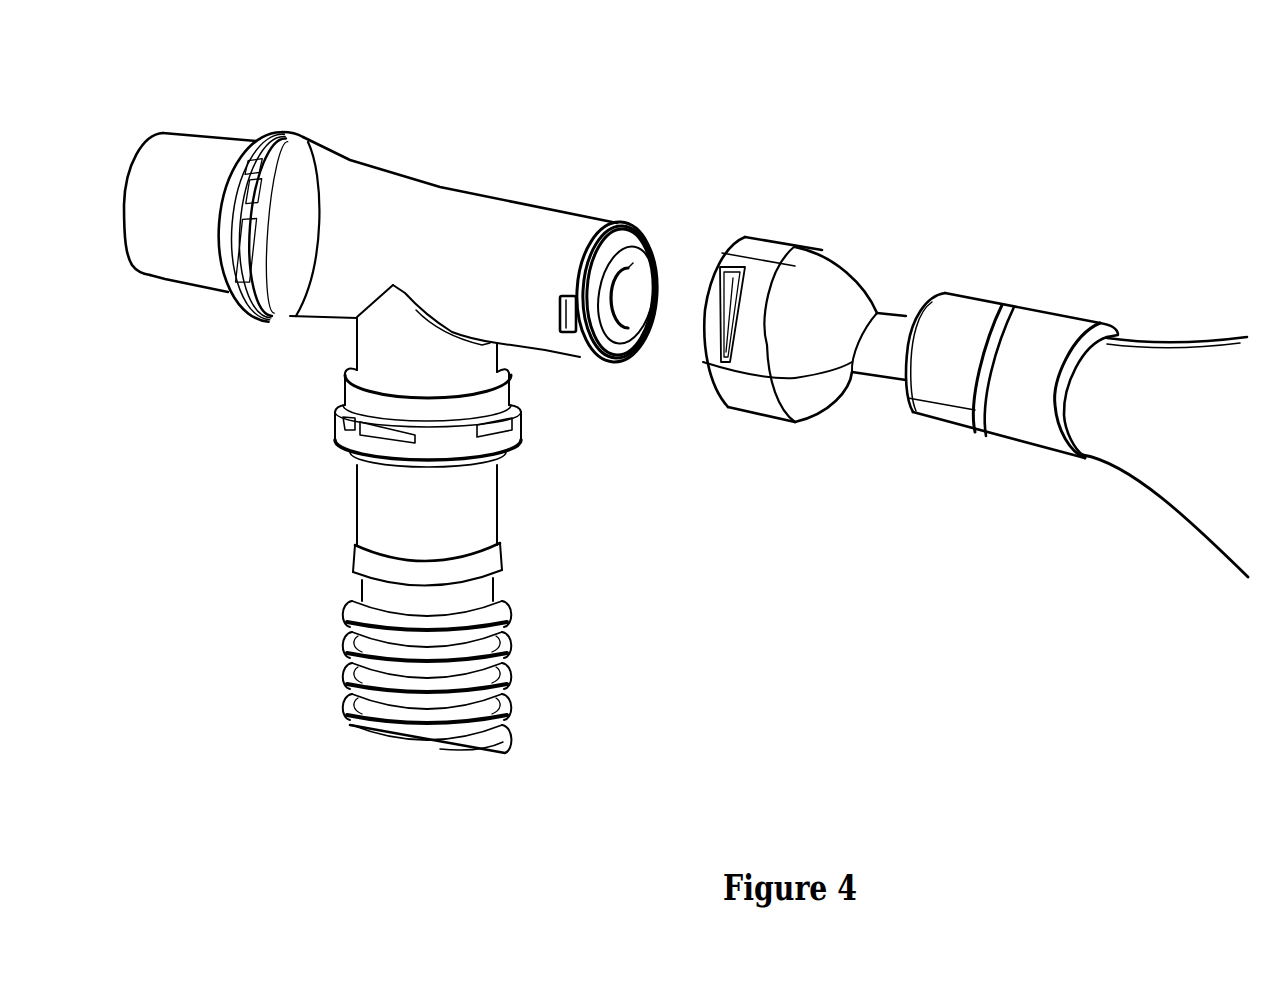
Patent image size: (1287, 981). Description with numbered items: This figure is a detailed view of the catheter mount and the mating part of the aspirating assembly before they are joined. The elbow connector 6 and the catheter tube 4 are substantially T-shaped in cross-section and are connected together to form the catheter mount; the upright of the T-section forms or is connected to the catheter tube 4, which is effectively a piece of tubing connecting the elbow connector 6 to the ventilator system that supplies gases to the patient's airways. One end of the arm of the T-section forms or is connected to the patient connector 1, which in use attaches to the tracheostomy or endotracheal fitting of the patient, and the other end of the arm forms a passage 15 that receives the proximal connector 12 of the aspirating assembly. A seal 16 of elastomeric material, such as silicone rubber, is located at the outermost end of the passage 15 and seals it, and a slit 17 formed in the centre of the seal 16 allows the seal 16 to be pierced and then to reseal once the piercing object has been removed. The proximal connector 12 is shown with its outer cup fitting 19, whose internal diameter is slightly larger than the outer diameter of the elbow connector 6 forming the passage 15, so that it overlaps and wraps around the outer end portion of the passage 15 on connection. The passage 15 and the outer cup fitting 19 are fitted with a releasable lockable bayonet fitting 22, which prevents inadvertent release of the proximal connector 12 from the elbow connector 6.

The patient connector 1 is at (190, 148).
The elbow connector 6 is at (408, 205).
The passage 15 is at (560, 230).
The seal 16 is at (638, 320).
The slit 17 is at (617, 293).
The bayonet fitting 22 is at (571, 332).
The outer cup fitting 19 is at (750, 232).
The proximal connector 12 is at (842, 408).
The catheter tube 4 is at (520, 685).